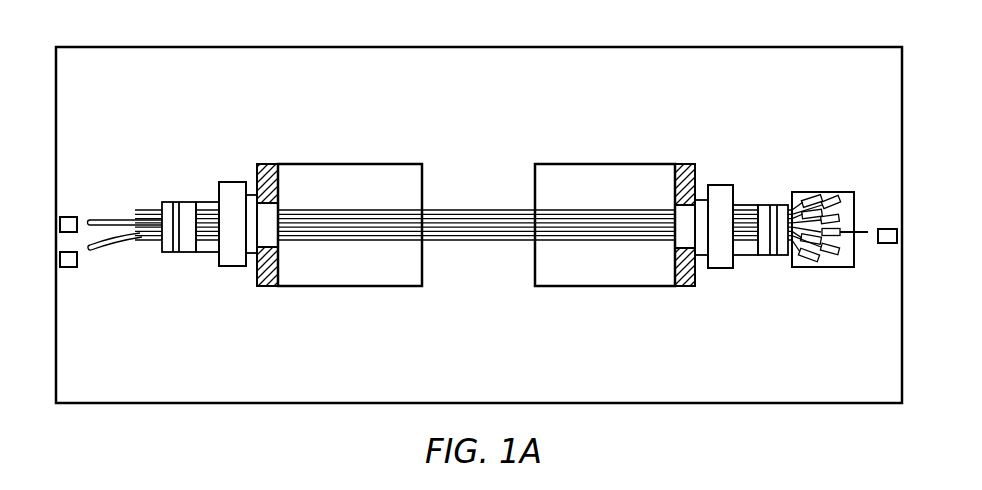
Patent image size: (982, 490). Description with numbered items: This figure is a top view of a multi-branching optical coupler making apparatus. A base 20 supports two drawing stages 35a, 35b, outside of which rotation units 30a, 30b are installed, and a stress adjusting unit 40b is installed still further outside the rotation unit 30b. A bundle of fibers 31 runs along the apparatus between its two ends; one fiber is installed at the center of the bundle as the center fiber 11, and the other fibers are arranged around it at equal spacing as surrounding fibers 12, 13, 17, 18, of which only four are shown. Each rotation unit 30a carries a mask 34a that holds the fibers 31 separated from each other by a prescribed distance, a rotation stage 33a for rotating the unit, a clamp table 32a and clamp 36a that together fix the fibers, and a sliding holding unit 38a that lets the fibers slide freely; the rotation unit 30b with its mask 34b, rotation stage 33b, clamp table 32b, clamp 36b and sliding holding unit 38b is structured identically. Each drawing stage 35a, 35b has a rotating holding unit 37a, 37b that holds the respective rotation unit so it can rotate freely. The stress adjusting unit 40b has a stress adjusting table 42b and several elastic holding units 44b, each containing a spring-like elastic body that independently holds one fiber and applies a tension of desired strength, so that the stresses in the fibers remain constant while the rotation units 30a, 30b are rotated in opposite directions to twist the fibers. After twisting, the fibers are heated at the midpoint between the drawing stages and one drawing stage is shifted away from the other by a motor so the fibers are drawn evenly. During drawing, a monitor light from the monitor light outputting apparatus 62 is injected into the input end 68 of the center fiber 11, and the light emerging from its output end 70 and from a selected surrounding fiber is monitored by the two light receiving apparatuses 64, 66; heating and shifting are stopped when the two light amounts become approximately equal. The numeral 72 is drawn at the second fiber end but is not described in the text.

The base 20 is at (836, 47).
The fibers 31 is at (463, 160).
The center fiber 11 is at (461, 224).
The surrounding fiber 12 is at (440, 216).
The surrounding fiber 13 is at (427, 212).
The surrounding fiber 17 is at (413, 122).
The surrounding fiber 18 is at (482, 232).
The rotation unit 30a is at (203, 224).
The rotation unit 30b is at (748, 227).
The clamp table 32a is at (218, 202).
The clamp table 32b is at (750, 205).
The rotation stage 33a is at (230, 188).
The rotation stage 33b is at (723, 188).
The mask 34a is at (251, 195).
The mask 34b is at (700, 200).
The drawing stage 35a is at (318, 288).
The drawing stage 35b is at (643, 288).
The clamp 36a is at (172, 253).
The clamp 36b is at (774, 253).
The rotating holding unit 37a is at (265, 165).
The rotating holding unit 37b is at (685, 225).
The sliding holding unit 38a is at (205, 253).
The sliding holding unit 38b is at (752, 256).
The stress adjusting unit 40b is at (838, 228).
The stress adjusting table 42b is at (852, 205).
The elastic holding units 44b is at (832, 200).
The monitor light outputting apparatus 62 is at (885, 244).
The light receiving apparatus 64 is at (72, 216).
The light receiving apparatus 66 is at (72, 268).
The input end 68 is at (884, 228).
The output end 70 is at (104, 219).
The optical fiber 72 is at (105, 251).